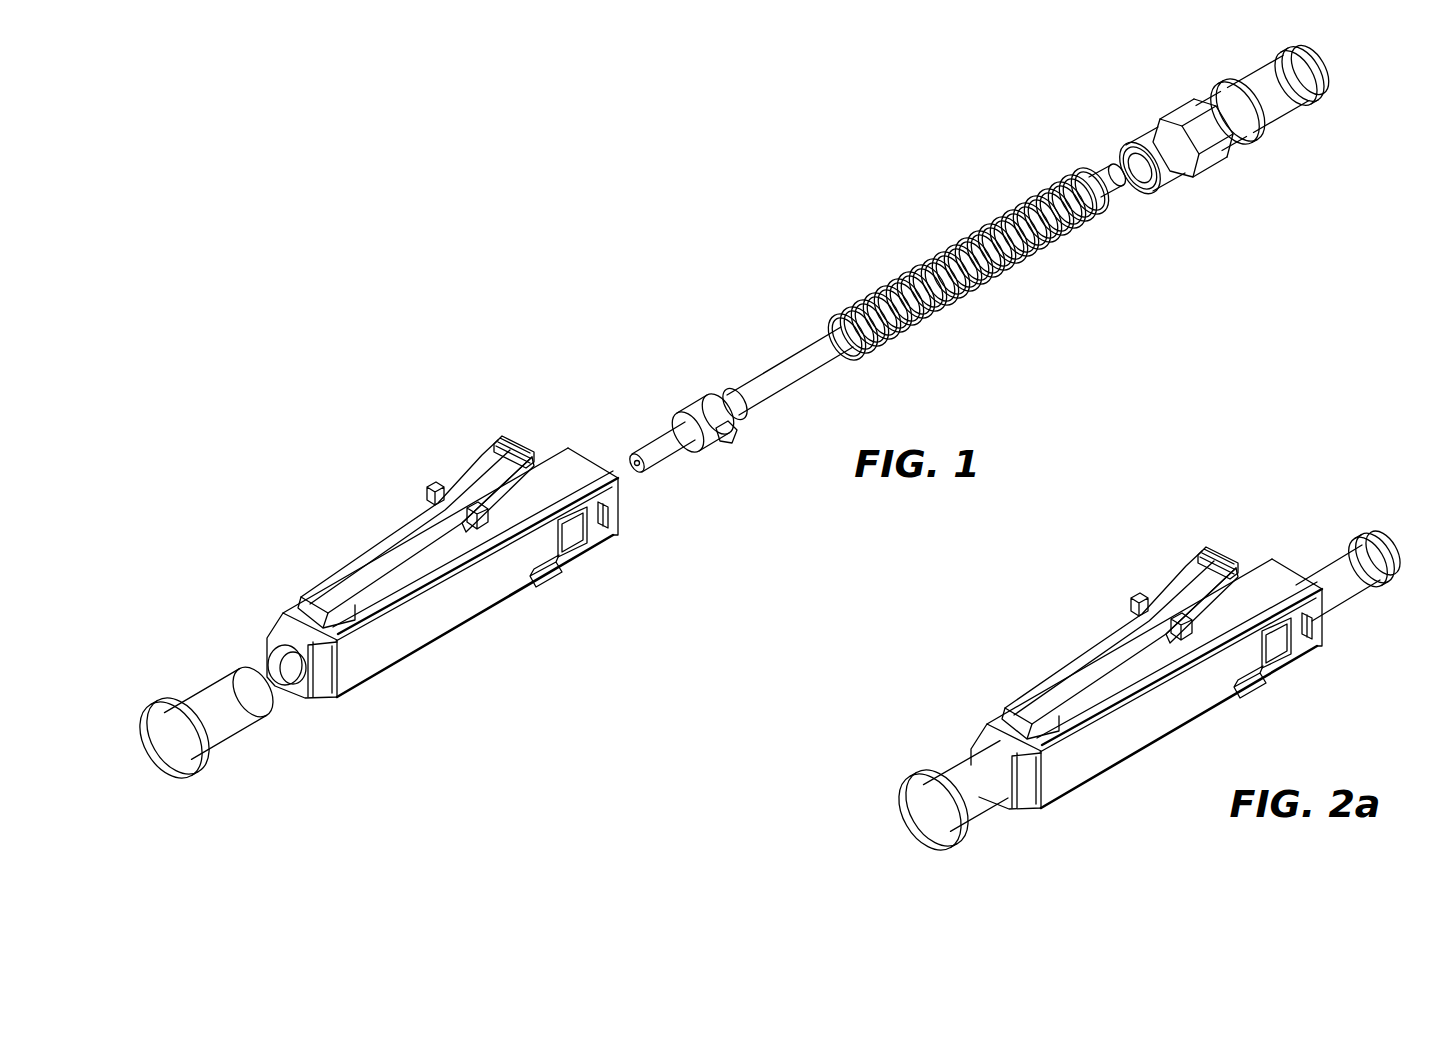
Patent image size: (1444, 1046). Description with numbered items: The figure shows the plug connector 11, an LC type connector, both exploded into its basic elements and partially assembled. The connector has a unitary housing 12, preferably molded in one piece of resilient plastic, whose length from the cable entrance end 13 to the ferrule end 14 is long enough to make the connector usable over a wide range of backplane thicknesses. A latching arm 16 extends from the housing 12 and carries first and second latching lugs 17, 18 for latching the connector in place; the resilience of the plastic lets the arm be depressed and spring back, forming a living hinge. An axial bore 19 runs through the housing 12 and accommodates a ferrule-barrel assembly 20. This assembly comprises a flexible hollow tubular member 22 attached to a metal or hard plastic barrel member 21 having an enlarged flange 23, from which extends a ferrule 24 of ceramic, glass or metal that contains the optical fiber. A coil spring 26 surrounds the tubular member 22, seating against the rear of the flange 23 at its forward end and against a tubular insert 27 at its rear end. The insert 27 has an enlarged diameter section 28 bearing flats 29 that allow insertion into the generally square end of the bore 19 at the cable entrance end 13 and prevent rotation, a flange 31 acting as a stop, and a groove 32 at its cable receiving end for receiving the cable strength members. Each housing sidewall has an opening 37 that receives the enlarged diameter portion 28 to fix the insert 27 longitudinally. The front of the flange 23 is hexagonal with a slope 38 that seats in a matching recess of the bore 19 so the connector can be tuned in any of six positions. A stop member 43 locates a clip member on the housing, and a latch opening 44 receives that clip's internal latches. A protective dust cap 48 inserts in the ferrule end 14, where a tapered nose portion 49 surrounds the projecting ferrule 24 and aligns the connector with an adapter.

In FIG. 1, the plug connector 11 is at (510, 381).
In FIG. 1, the unitary housing 12 is at (373, 665).
In FIG. 1, the cable entrance end 13 is at (590, 456).
In FIG. 1, the ferrule end 14 is at (293, 684).
In FIG. 1, the latching arm 16 is at (473, 476).
In FIG. 2a, the latching arm 16 is at (1178, 584).
In FIG. 1, the first latching lug 17 is at (430, 488).
In FIG. 2a, the first latching lug 17 is at (1137, 601).
In FIG. 1, the second latching lug 18 is at (476, 522).
In FIG. 2a, the second latching lug 18 is at (1195, 635).
In FIG. 1, the axial bore 19 is at (283, 661).
In FIG. 1, the ferrule-barrel assembly 20 is at (838, 387).
In FIG. 1, the barrel member 21 is at (742, 416).
In FIG. 1, the flexible hollow tubular member 22 is at (796, 362).
In FIG. 1, the enlarged flange 23 is at (728, 437).
In FIG. 1, the ferrule 24 is at (658, 455).
In FIG. 1, the coil spring 26 is at (922, 268).
In FIG. 1, the insert 27 is at (1172, 175).
In FIG. 2a, the insert 27 is at (1381, 545).
In FIG. 1, the enlarged diameter section 28 is at (1210, 160).
In FIG. 1, the flats 29 is at (1177, 118).
In FIG. 1, the flange 31 is at (1248, 148).
In FIG. 1, the groove 32 is at (1300, 105).
In FIG. 2a, the groove 32 is at (1346, 540).
In FIG. 1, the opening 37 is at (569, 535).
In FIG. 2a, the opening 37 is at (1274, 648).
In FIG. 1, the slope 38 is at (692, 413).
In FIG. 1, the stop member 43 is at (546, 571).
In FIG. 2a, the stop member 43 is at (1254, 698).
In FIG. 1, the latch opening 44 is at (612, 511).
In FIG. 2a, the latch opening 44 is at (1318, 623).
In FIG. 1, the protective dust cap 48 is at (222, 748).
In FIG. 2a, the protective dust cap 48 is at (968, 835).
In FIG. 1, the tapered nose portion 49 is at (287, 626).
In FIG. 2a, the tapered nose portion 49 is at (991, 739).